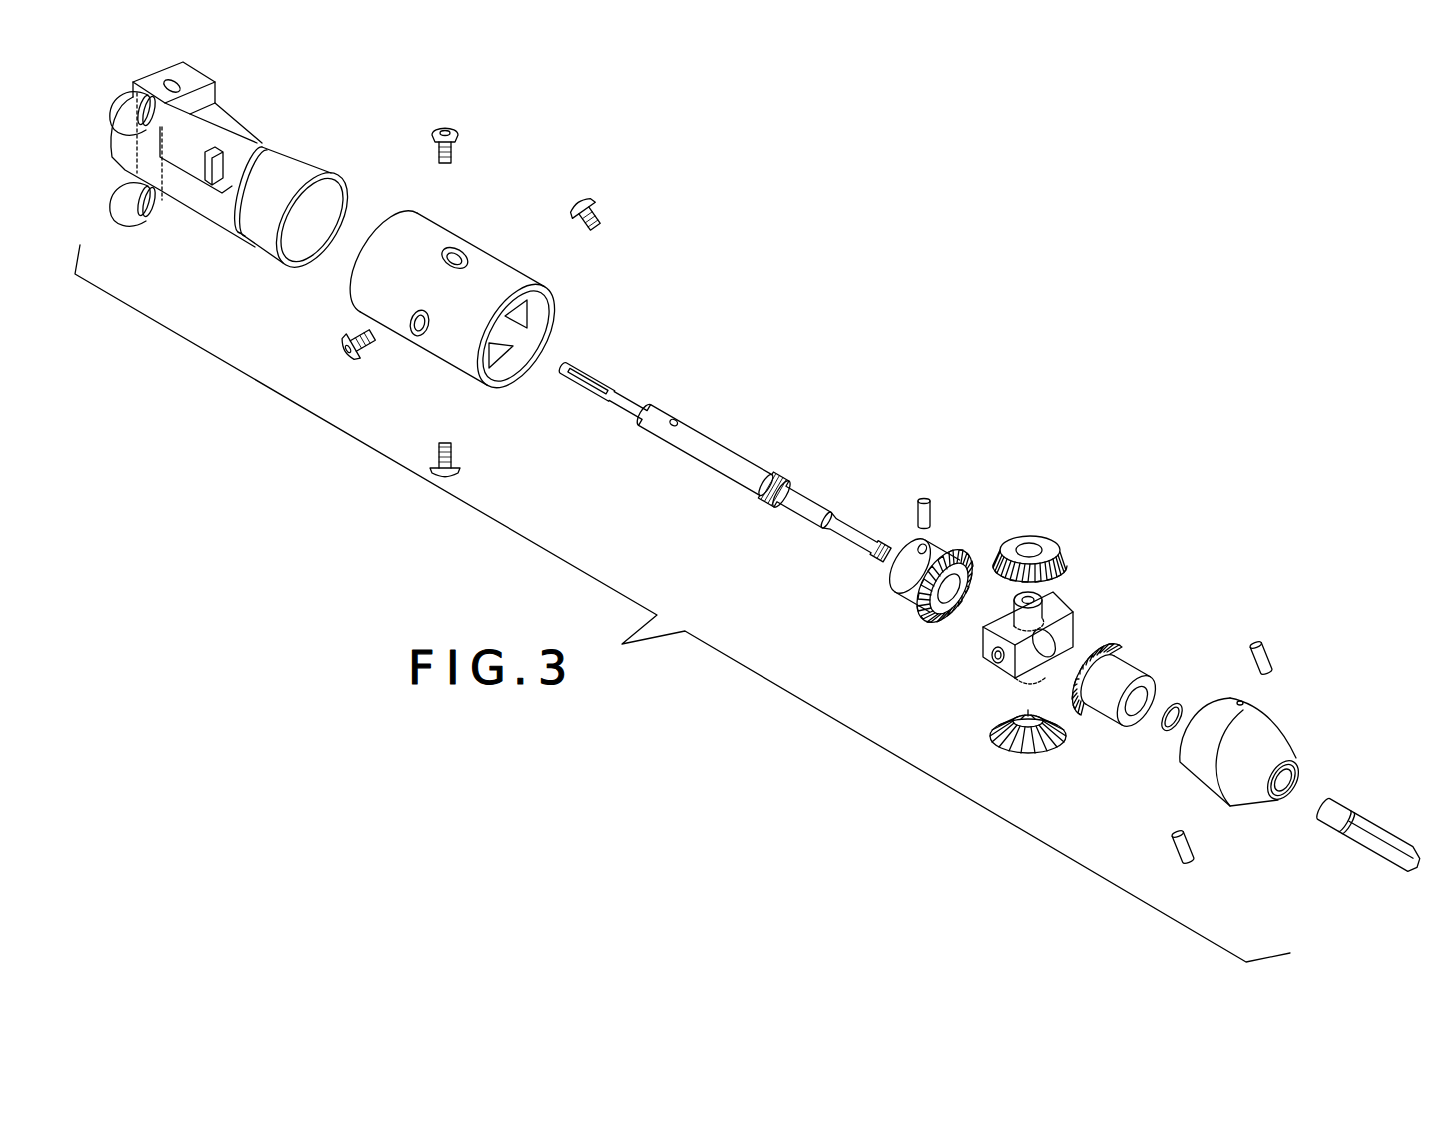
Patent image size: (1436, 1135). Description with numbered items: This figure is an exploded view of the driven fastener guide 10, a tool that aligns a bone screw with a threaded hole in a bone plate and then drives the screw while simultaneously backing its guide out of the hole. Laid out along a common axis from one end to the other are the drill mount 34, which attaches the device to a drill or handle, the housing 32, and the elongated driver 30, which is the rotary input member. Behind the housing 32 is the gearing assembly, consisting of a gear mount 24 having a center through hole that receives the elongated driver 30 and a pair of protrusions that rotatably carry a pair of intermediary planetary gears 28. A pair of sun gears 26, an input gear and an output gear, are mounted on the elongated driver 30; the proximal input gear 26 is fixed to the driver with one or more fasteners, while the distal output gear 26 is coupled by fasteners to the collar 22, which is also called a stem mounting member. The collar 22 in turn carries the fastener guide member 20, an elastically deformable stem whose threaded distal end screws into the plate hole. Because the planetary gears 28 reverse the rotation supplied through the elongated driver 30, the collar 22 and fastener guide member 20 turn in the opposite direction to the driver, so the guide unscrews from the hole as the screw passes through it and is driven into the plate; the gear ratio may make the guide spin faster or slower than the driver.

The driven fastener guide 10 is at (735, 253).
The fastener guide member 20 is at (1380, 853).
The collar 22 is at (1275, 745).
The gear mount 24 is at (987, 648).
The sun gears 26 is at (905, 588).
The planetary gears 28 is at (1043, 533).
The elongated driver 30 is at (722, 446).
The housing 32 is at (493, 268).
The drill mount 34 is at (312, 160).